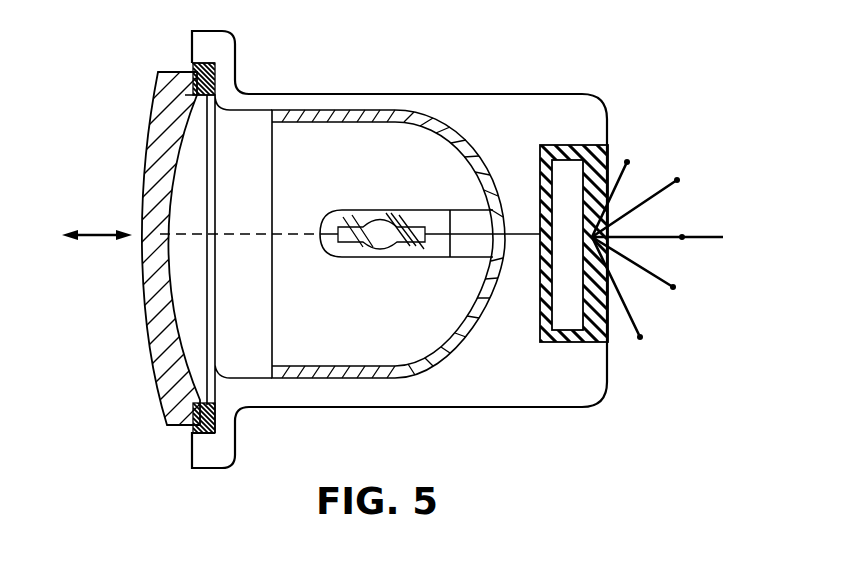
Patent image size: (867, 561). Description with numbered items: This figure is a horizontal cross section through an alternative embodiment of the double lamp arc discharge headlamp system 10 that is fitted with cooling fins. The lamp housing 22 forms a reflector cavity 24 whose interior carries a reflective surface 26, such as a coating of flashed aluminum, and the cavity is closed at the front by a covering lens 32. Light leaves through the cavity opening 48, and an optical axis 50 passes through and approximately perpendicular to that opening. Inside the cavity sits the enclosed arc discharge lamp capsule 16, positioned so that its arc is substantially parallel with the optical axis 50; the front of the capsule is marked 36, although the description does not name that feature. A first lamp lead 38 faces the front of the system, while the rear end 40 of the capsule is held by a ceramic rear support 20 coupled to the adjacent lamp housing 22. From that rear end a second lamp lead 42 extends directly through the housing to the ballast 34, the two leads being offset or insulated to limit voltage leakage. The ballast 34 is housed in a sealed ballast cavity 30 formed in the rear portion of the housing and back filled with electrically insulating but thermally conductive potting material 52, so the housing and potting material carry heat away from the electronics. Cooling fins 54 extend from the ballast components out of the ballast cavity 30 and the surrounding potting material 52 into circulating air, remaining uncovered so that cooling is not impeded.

The arc discharge headlamp system 10 is at (377, 250).
The arc discharge lamp capsule 16 is at (382, 258).
The rear support 20 is at (457, 210).
The lamp housing 22 is at (472, 407).
The reflector cavity 24 is at (277, 324).
The reflective surface 26 is at (388, 122).
The ballast cavity 30 is at (569, 145).
The covering lens 32 is at (143, 280).
The ballast 34 is at (722, 237).
The lamp tip 36 is at (320, 236).
The first lamp lead 38 is at (333, 252).
The rear end 40 is at (418, 210).
The second lamp lead 42 is at (437, 244).
The cavity opening 48 is at (131, 340).
The optical axis 50 is at (97, 218).
The potting material 52 is at (570, 343).
The cooling fins 54 is at (685, 183).